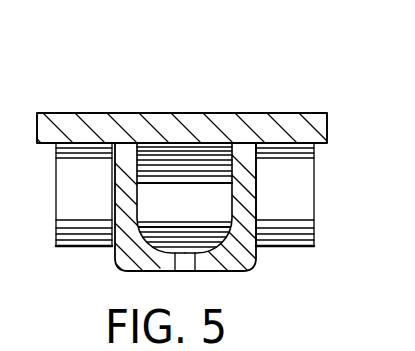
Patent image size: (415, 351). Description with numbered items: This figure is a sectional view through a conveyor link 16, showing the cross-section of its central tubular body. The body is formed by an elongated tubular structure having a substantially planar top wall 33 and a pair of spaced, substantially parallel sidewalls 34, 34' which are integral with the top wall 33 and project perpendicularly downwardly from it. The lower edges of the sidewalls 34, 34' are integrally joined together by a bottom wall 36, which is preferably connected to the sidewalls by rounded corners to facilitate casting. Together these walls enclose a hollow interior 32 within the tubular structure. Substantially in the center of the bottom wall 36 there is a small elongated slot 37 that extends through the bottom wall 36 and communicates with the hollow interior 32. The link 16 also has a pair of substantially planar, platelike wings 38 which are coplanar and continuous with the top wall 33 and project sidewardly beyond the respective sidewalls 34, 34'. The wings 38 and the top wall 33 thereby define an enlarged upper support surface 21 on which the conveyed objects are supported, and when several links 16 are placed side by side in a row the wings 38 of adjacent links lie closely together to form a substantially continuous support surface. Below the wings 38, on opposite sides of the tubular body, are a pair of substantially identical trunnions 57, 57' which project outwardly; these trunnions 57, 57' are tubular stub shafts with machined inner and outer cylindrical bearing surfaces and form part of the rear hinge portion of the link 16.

The link 16 is at (366, 85).
The upper support surface 21 is at (138, 113).
The hollow interior 32 is at (188, 172).
The top wall 33 is at (213, 128).
The sidewall 34 is at (122, 235).
The sidewall 34' is at (270, 220).
The bottom wall 36 is at (215, 262).
The slot 37 is at (183, 262).
The wings 38 is at (62, 128).
The trunnion 57 is at (67, 194).
The trunnion 57' is at (314, 190).